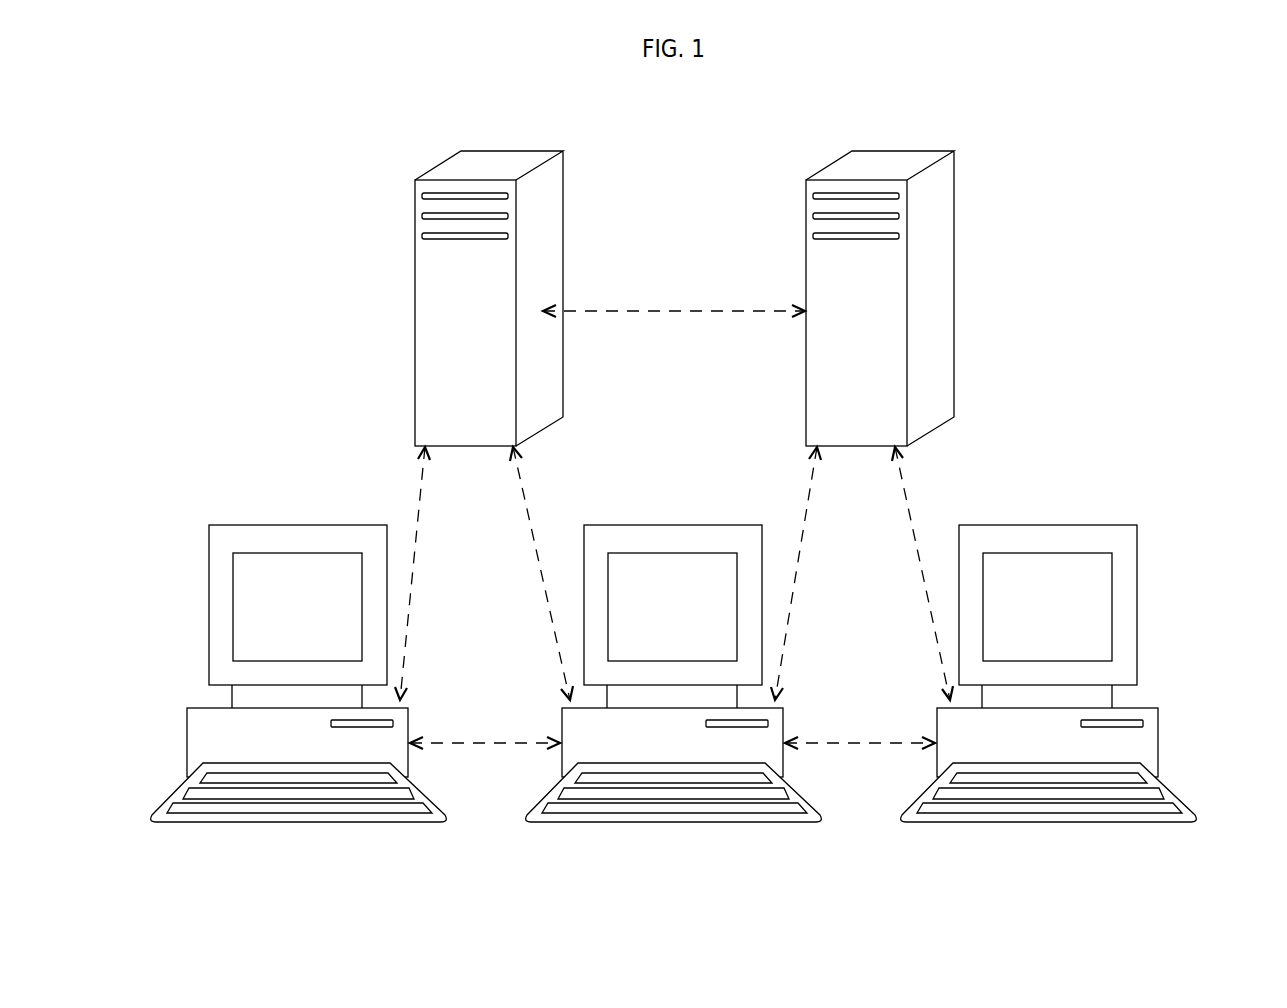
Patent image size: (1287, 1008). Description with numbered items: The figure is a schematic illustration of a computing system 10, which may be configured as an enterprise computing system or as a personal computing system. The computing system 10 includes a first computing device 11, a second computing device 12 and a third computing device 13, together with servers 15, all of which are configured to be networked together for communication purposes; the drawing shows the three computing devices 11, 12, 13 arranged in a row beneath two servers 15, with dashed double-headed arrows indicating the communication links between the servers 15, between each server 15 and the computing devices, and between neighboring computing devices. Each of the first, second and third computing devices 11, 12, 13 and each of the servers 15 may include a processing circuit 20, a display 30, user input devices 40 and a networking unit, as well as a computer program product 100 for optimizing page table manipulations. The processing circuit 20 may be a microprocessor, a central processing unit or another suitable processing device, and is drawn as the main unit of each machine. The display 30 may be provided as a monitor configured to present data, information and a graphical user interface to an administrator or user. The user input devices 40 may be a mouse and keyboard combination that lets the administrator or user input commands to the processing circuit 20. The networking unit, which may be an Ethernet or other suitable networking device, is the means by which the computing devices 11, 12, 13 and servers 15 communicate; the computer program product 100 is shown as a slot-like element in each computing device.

The computing system 10 is at (302, 335).
The first computing device 11 is at (185, 818).
The second computing device 12 is at (620, 818).
The third computing device 13 is at (1003, 818).
The server 15 is at (462, 170).
The processing circuit 20 is at (440, 297).
The display 30 is at (222, 548).
The user input devices 40 is at (322, 796).
The computer program product 100 is at (331, 722).